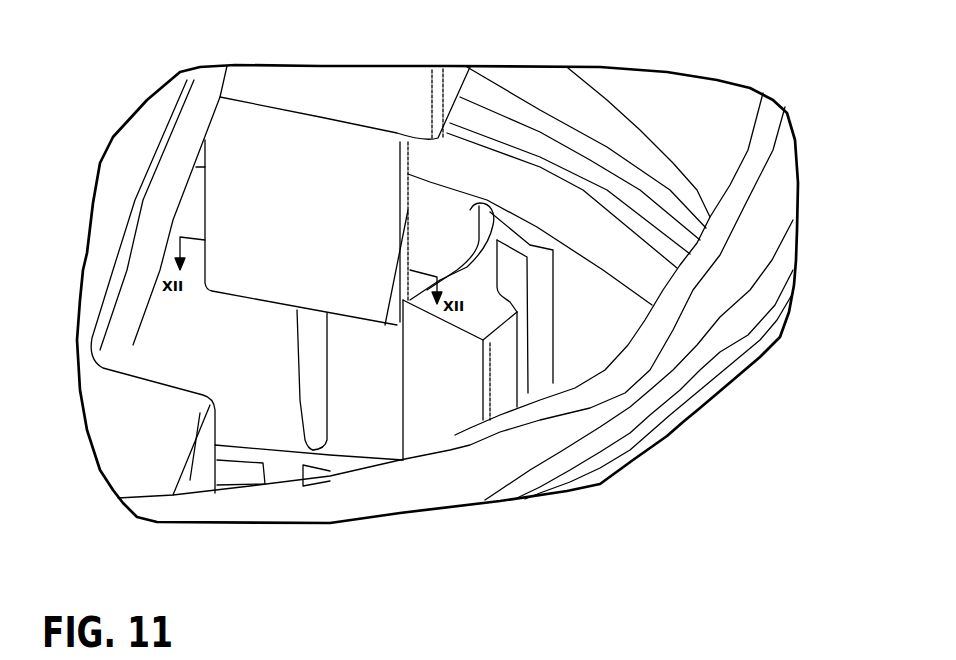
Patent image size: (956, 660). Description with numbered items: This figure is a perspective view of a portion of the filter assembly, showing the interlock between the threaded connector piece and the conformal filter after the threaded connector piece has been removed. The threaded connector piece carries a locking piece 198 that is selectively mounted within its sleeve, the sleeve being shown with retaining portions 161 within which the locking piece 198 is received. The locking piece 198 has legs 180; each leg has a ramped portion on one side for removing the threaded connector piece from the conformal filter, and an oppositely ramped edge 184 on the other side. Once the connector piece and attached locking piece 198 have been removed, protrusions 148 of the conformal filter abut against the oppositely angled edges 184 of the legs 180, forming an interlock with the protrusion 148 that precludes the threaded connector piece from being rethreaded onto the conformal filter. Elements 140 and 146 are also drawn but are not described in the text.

The outer wall band 140 is at (745, 340).
The cavity rim lip 146 is at (588, 336).
The protrusion 148 is at (457, 380).
The retaining portion 161 is at (383, 103).
The leg 180 is at (274, 305).
The oppositely ramped edge 184 is at (415, 207).
The locking piece 198 is at (122, 168).